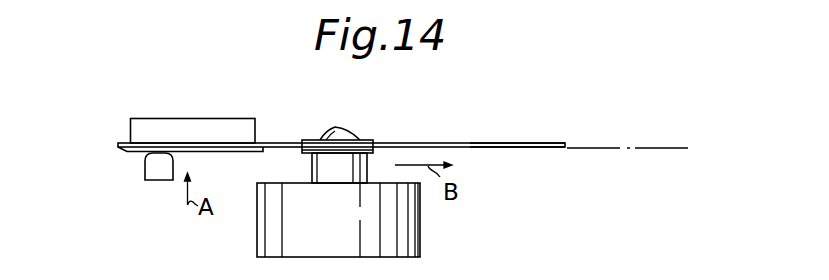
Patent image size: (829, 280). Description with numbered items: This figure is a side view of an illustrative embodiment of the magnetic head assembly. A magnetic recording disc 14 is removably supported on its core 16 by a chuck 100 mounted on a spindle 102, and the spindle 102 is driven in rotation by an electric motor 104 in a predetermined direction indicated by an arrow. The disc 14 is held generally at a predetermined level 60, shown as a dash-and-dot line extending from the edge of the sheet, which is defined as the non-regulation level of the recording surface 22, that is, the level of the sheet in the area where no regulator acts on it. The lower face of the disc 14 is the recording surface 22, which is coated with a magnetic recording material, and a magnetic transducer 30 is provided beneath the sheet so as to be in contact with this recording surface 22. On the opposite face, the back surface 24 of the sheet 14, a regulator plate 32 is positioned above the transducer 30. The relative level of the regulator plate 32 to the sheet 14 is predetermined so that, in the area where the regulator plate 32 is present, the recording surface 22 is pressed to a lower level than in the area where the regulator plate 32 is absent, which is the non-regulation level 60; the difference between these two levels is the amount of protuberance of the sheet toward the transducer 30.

The magnetic recording disc 14 is at (117, 144).
The regulator plate 32 is at (213, 118).
The magnetic transducer 30 is at (150, 181).
The spindle 102 is at (312, 166).
The core 16 is at (368, 142).
The chuck 100 is at (343, 135).
The electric motor 104 is at (420, 230).
The recording surface 22 is at (475, 149).
The back surface 24 is at (525, 143).
The non-regulation level 60 is at (652, 150).